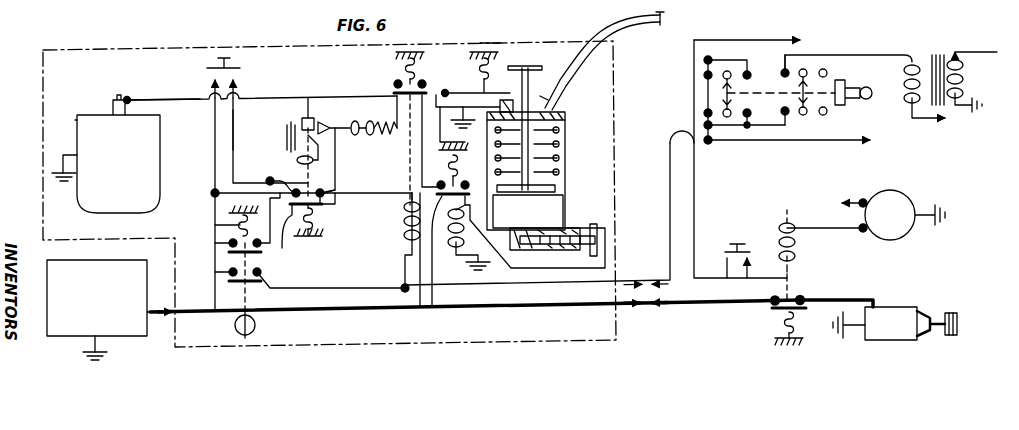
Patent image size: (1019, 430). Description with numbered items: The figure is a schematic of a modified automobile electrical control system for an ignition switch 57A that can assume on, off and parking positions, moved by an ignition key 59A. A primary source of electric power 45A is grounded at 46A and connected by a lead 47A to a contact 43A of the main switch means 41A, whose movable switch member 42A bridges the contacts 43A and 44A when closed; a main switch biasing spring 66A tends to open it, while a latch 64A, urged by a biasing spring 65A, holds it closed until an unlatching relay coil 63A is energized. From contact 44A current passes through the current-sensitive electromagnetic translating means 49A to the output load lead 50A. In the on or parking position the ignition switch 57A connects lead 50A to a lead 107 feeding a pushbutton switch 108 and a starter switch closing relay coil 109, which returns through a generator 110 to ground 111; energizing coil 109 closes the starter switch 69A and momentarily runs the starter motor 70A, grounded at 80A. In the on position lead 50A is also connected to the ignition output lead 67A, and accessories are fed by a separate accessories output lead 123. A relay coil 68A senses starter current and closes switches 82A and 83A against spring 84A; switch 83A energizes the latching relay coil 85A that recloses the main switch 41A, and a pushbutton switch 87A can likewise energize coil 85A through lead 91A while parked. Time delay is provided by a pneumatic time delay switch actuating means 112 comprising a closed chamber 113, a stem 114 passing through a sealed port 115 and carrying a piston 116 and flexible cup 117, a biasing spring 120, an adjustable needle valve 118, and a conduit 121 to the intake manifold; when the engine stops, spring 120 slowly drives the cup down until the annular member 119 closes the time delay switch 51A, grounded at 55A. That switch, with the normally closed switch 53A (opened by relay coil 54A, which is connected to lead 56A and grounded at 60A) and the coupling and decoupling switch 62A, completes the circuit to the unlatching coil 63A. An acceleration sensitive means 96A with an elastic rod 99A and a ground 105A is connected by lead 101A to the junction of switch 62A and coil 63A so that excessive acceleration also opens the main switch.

The acceleration sensitive means 96A is at (70, 118).
The elastic rod 99A is at (115, 98).
The ground 105A is at (52, 168).
The lead 101A is at (192, 99).
The lead 91A is at (232, 128).
The pushbutton switch 87A is at (216, 62).
The spring 84A is at (238, 222).
The switch 83A is at (228, 237).
The switch 82A is at (233, 272).
The relay coil 68A is at (256, 325).
The primary source of electric power 45A is at (115, 336).
The ground 46A is at (100, 358).
The lead 47A is at (170, 313).
The latch 64A is at (309, 117).
The latching relay coil 85A is at (297, 160).
The contact 43A is at (268, 181).
The coupling and decoupling switch 62A is at (396, 82).
The unlatching relay coil 63A is at (356, 136).
The biasing spring 65A is at (392, 134).
The contact 44A is at (328, 192).
The main switch means 41A is at (334, 205).
The movable switch member 42A is at (300, 222).
The main switch biasing spring 66A is at (320, 236).
The electro-magnetic translating means 49A is at (402, 222).
The normally closed switch 53A is at (411, 300).
The ground 55A is at (476, 88).
The relay coil 54A is at (432, 308).
The ground 60A is at (486, 283).
The lead 56A is at (650, 40).
The biasing spring 120 is at (568, 120).
The switch actuating annular member 119 is at (520, 66).
The piston 116 is at (566, 152).
The closed chamber 113 is at (566, 178).
The flexible cup 117 is at (566, 210).
The adjustable needle valve 118 is at (540, 260).
The pneumatic time delay switch actuating means 112 is at (550, 45).
The stem 114 is at (595, 30).
The conduit 121 is at (663, 18).
The sealed port 115 is at (562, 100).
The time delay switch means 51A is at (492, 42).
The accessories output lead 123 is at (765, 38).
The lead 107 is at (696, 205).
The output load lead 50A is at (752, 142).
The ignition key 59A is at (848, 104).
The ignition switch 57A is at (808, 56).
The ignition output lead 67A is at (908, 55).
The pushbutton switch 108 is at (733, 245).
The starter switch closing relay coil 109 is at (800, 250).
The generator 110 is at (908, 196).
The ground 111 is at (947, 220).
The starter switch 69A is at (768, 312).
The starter motor 70A is at (890, 302).
The ground 80A is at (850, 335).